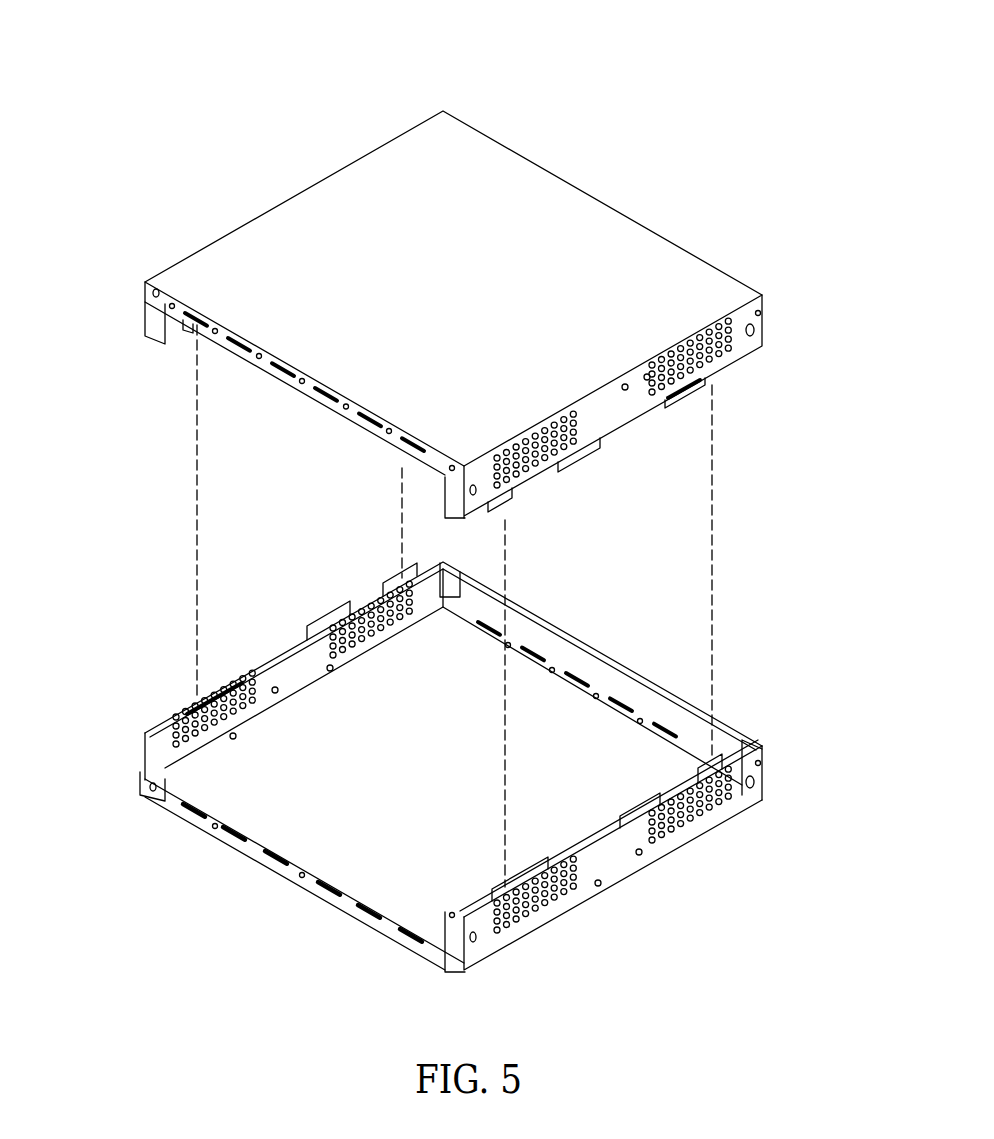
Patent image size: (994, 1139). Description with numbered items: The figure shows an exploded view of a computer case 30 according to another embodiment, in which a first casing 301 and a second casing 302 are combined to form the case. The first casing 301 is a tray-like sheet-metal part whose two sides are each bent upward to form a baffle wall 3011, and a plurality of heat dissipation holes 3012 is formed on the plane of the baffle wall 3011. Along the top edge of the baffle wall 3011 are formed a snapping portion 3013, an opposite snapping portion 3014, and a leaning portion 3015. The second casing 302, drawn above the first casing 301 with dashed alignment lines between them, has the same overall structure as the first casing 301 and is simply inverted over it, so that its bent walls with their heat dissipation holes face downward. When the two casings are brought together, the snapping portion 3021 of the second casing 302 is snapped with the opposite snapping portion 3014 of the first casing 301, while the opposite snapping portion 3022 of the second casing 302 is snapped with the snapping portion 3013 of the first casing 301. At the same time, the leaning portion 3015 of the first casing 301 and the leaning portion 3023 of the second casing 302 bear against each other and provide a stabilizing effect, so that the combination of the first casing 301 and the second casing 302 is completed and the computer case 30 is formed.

The computer case 30 is at (173, 183).
The first casing 301 is at (302, 833).
The second casing 302 is at (507, 207).
The baffle wall 3011 is at (618, 875).
The heat dissipation holes 3012 is at (673, 830).
The snapping portion 3013 is at (713, 752).
The opposite snapping portion 3014 is at (520, 925).
The leaning portion 3015 is at (640, 807).
The snapping portion 3021 is at (473, 522).
The opposite snapping portion 3022 is at (712, 382).
The leaning portion 3023 is at (585, 457).